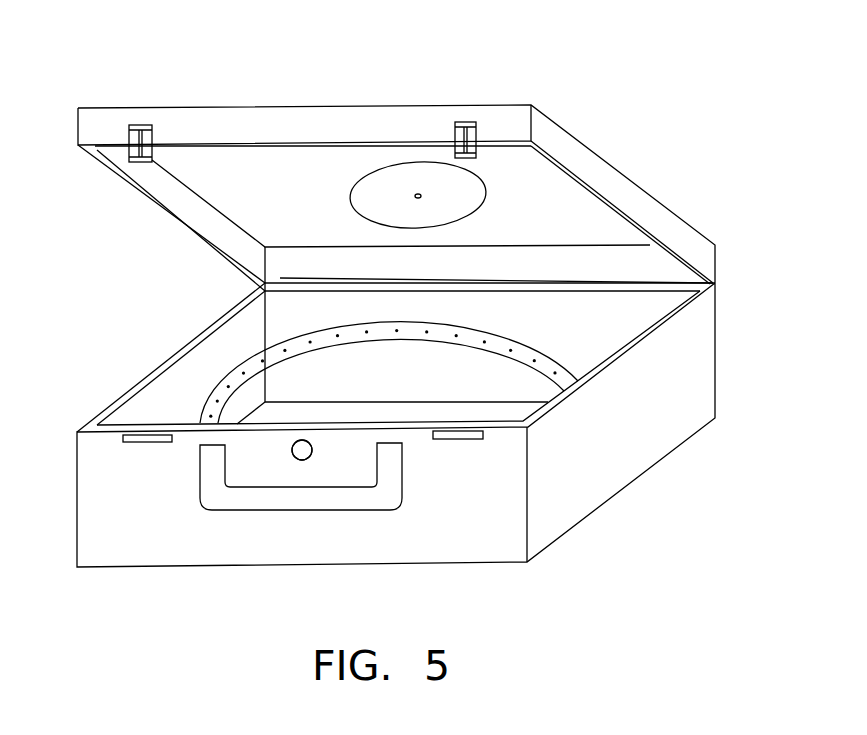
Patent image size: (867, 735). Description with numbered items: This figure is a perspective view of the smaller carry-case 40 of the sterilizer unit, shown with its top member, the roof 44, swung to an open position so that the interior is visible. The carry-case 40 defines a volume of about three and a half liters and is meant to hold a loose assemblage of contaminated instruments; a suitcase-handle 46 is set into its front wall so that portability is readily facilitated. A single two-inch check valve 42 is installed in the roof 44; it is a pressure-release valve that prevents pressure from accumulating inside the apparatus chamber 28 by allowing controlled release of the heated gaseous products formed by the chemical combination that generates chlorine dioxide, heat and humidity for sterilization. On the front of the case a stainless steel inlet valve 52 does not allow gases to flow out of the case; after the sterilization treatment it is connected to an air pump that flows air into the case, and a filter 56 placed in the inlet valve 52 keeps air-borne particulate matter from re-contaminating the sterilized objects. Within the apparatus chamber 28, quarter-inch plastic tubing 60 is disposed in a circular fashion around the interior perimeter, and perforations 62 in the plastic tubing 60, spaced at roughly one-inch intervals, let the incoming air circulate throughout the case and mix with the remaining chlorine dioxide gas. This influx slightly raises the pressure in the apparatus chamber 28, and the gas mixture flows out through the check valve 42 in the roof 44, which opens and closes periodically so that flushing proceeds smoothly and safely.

The smaller carry-case 40 is at (635, 106).
The roof 44 is at (282, 107).
The check valve 42 is at (397, 162).
The apparatus chamber 28 is at (460, 384).
The suitcase-handle 46 is at (200, 475).
The inlet valve 52 is at (312, 452).
The filter 56 is at (292, 456).
The plastic tubing 60 is at (203, 403).
The perforations 62 is at (303, 342).